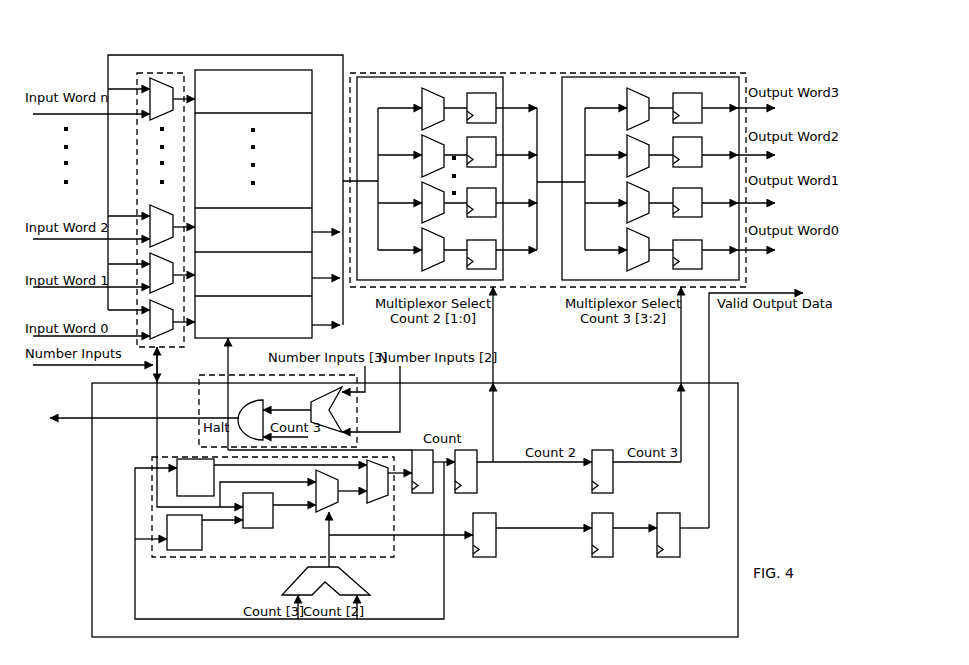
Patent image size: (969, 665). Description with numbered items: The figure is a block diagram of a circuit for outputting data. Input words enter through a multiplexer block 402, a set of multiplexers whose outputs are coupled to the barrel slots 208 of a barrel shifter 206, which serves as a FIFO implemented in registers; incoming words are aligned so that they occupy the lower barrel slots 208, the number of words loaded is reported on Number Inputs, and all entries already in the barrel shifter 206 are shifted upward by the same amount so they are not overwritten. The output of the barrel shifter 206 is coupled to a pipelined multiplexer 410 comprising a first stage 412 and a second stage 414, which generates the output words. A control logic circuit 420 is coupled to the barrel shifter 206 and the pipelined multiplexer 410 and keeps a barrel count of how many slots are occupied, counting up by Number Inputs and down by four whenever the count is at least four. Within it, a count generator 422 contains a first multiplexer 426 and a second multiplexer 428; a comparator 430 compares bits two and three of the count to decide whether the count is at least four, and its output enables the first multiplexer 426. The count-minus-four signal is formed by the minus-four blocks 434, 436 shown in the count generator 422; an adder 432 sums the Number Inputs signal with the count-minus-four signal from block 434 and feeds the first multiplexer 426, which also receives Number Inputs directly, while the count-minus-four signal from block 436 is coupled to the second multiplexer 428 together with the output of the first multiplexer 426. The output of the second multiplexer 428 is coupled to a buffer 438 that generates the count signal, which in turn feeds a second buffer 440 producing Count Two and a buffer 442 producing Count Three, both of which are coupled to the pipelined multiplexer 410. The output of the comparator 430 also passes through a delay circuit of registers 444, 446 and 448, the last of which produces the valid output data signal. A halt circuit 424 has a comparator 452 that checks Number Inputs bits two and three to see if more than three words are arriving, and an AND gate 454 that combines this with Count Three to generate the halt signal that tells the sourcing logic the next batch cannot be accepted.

The multiplexer block 402 is at (167, 80).
The barrel shifter 206 is at (268, 69).
The barrel slots 208 is at (337, 75).
The pipelined multiplexer 410 is at (533, 73).
The first stage 412 is at (460, 77).
The second stage 414 is at (682, 77).
The control logic circuit 420 is at (724, 382).
The count generator 422 is at (152, 457).
The halt circuit 424 is at (210, 376).
The first multiplexer 426 is at (333, 508).
The second multiplexer 428 is at (393, 505).
The comparator 430 is at (293, 584).
The adder 432 is at (262, 528).
The subtract-four unit 434 is at (203, 548).
The subtract-four unit 436 is at (190, 459).
The buffer 438 is at (424, 440).
The second buffer 440 is at (460, 450).
The buffer 442 is at (605, 450).
The register 444 is at (481, 513).
The register 446 is at (608, 513).
The register 448 is at (665, 513).
The comparator 452 is at (356, 410).
The AND gate 454 is at (265, 404).